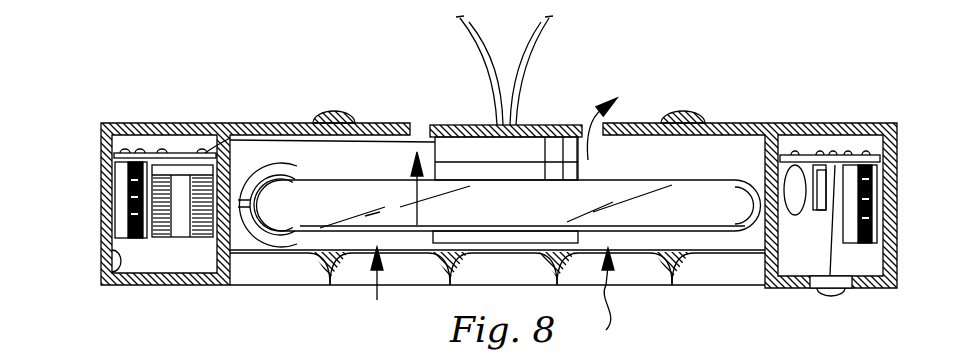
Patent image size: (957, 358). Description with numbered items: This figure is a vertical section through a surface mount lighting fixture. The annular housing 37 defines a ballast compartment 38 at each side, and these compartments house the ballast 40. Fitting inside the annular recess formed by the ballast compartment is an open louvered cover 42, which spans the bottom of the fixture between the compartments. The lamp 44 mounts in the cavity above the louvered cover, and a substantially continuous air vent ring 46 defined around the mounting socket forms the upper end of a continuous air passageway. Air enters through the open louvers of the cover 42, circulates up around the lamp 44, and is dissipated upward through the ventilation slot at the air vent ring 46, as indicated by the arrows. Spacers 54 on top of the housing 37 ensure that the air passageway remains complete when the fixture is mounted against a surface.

The annular housing 37 is at (87, 184).
The ballast compartment 38 is at (112, 284).
The ballast 40 is at (183, 197).
The open louvered cover 42 is at (700, 272).
The 2-D lamp 44 is at (327, 210).
The air vent ring 46 is at (421, 127).
The spacers 54 is at (692, 114).